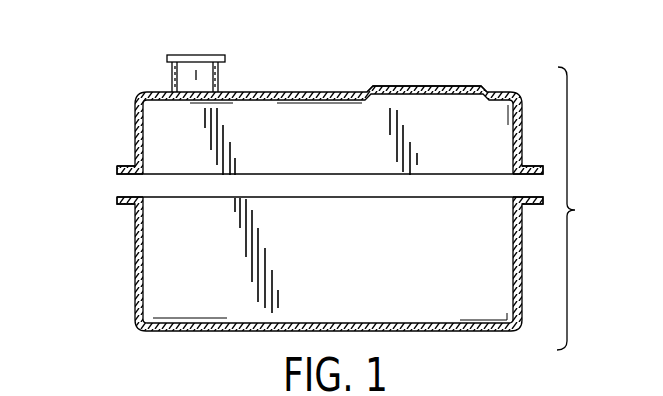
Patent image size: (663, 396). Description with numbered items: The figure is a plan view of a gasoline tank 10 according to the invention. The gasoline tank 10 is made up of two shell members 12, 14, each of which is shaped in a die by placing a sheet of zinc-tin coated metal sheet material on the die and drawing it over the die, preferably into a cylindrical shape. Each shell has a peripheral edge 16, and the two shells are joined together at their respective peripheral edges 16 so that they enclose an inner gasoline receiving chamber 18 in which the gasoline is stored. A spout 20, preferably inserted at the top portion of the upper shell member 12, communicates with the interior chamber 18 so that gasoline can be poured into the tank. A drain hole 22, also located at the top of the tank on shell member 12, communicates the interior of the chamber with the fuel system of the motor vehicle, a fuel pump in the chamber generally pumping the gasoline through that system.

The gasoline tank 10 is at (330, 67).
The shell member 12 is at (260, 92).
The shell member 14 is at (247, 333).
The peripheral edge 16 is at (120, 167).
The inner gasoline receiving chamber 18 is at (478, 122).
The spout 20 is at (172, 78).
The drain hole 22 is at (427, 90).